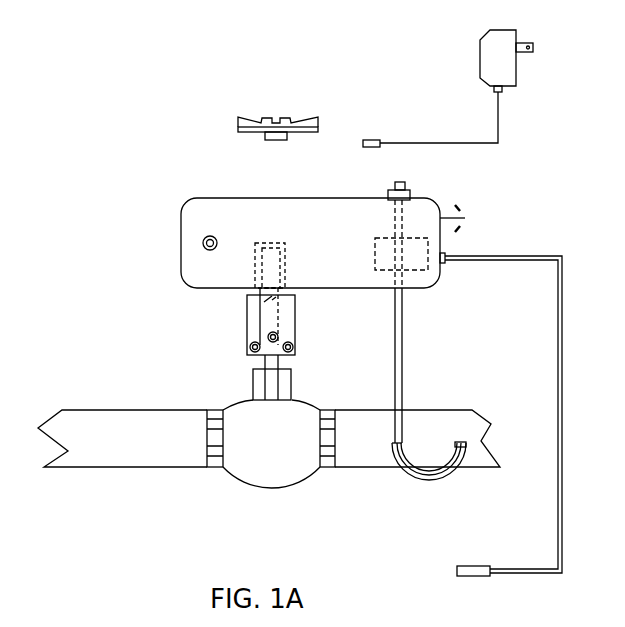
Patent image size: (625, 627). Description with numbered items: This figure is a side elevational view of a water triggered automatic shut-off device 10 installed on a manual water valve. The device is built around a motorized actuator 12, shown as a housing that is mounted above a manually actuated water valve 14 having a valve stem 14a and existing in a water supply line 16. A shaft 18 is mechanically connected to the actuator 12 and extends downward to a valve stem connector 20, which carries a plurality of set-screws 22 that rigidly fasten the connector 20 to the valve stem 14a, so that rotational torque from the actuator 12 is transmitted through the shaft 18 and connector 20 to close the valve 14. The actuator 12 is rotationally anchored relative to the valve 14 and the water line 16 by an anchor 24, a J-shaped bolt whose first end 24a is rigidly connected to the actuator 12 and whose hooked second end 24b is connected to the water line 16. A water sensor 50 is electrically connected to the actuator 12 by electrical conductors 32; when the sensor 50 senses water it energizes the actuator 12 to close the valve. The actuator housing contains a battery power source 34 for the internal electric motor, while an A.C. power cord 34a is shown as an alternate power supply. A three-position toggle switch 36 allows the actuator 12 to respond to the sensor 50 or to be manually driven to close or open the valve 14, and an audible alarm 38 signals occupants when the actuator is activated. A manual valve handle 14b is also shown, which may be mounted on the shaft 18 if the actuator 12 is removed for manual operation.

The water triggered automatic shut-off device 10 is at (176, 192).
The motorized actuator 12 is at (345, 198).
The manually actuated water valve 14 is at (253, 487).
The valve stem 14a is at (254, 362).
The manual valve handle 14b is at (268, 118).
The water supply line 16 is at (140, 453).
The shaft 18 is at (236, 290).
The valve stem connector 20 is at (298, 313).
The set-screws 22 is at (293, 346).
The anchor 24 is at (405, 322).
The first end of anchor 24a is at (405, 187).
The second end of anchor 24b is at (431, 481).
The electrical conductors 32 is at (556, 370).
The battery power source 34 is at (428, 270).
The A.C. power cord 34a is at (490, 30).
The toggle switch 36 is at (468, 218).
The audible alarm 38 is at (203, 243).
The water sensor 50 is at (468, 566).